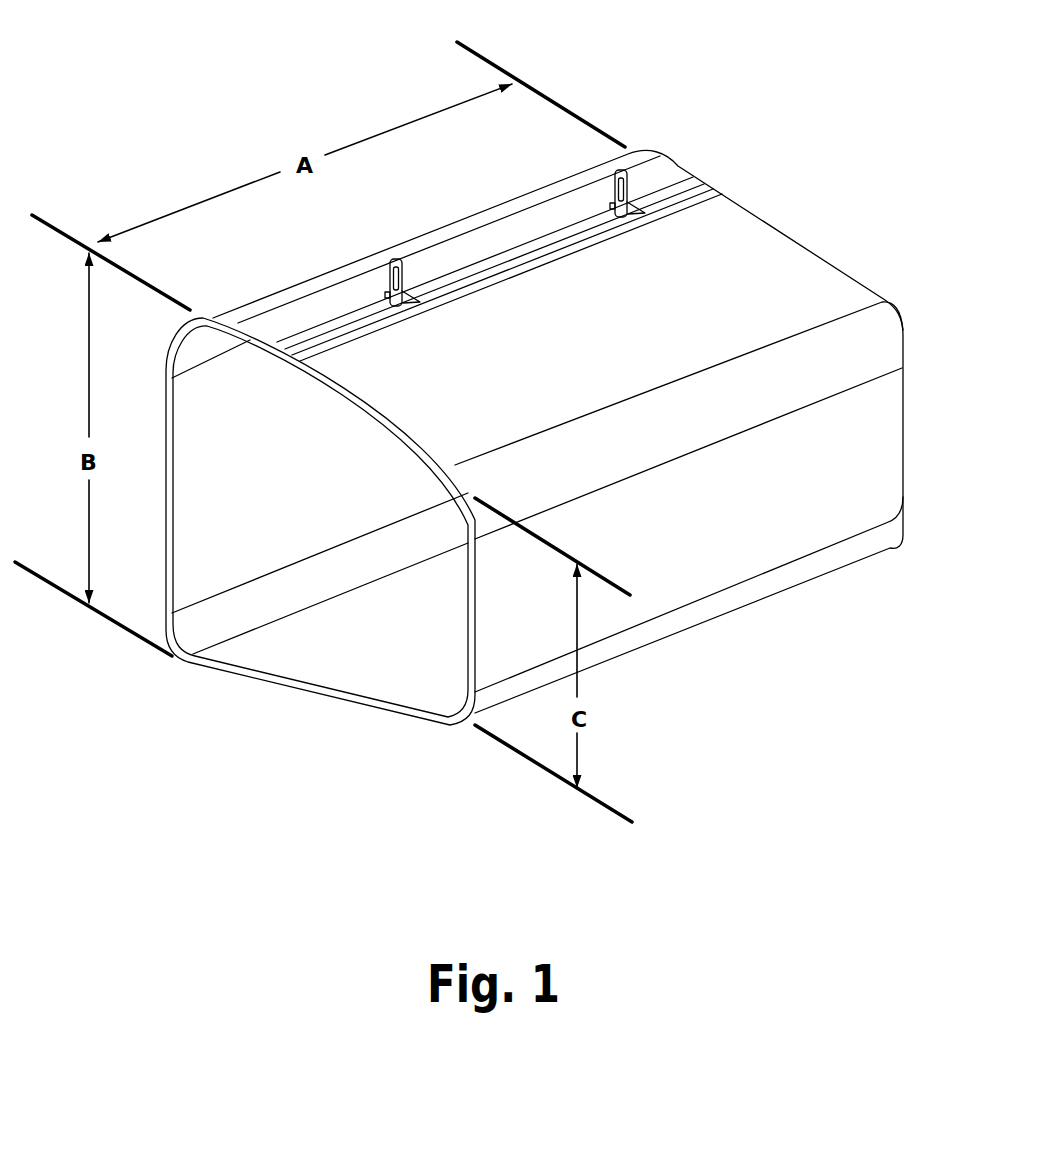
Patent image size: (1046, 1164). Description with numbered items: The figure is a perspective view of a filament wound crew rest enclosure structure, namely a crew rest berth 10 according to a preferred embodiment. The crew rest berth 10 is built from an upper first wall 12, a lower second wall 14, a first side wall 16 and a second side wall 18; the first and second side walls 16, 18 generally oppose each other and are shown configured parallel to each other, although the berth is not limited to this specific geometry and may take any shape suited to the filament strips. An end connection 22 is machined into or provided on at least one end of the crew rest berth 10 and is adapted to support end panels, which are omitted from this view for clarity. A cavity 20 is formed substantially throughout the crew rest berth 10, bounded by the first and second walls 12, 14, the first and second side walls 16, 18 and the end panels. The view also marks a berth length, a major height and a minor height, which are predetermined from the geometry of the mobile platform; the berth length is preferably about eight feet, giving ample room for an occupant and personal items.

The crew rest berth 10 is at (115, 108).
The upper first wall 12 is at (283, 318).
The lower second wall 14 is at (245, 678).
The first side wall 16 is at (164, 424).
The second side wall 18 is at (693, 567).
The cavity 20 is at (405, 648).
The end connection 22 is at (441, 726).